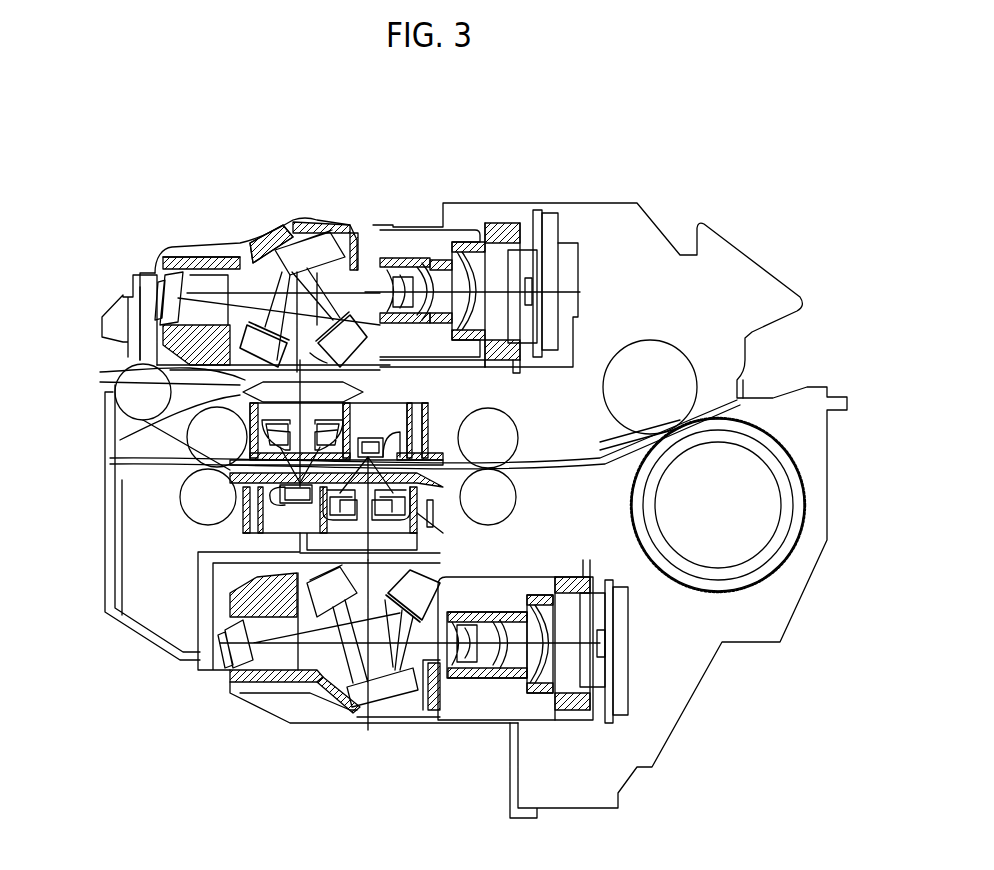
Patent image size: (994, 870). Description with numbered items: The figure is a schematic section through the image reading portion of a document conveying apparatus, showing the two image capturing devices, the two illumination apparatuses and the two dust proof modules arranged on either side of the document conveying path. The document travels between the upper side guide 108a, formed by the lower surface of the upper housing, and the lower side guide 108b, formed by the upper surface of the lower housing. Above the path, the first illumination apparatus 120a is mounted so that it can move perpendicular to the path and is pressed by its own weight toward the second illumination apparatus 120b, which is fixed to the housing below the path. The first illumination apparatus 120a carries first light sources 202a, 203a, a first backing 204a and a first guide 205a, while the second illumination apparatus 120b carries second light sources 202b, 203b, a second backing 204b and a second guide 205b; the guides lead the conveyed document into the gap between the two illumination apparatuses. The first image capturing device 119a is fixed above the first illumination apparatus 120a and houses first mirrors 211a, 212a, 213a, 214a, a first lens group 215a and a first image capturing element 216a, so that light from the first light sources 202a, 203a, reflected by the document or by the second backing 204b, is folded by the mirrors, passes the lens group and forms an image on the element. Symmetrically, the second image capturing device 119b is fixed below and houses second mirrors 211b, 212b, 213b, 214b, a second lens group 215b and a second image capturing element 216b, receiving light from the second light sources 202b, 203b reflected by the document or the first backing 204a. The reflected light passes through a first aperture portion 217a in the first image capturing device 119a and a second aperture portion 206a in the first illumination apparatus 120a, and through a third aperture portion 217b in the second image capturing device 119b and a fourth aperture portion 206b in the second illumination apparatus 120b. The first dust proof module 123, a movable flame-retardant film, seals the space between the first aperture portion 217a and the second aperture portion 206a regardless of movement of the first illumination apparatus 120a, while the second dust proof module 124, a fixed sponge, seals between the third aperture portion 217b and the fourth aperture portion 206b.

The upper side guide 108a is at (598, 440).
The lower side guide 108b is at (592, 472).
The first image capturing device 119a is at (548, 232).
The second image capturing device 119b is at (622, 657).
The first illumination apparatus 120a is at (440, 398).
The second illumination apparatus 120b is at (250, 530).
The first dust proof module 123 is at (140, 388).
The second dust proof module 124 is at (300, 553).
The first light source 202a is at (250, 462).
The second light source 202b is at (417, 512).
The first light source 203a is at (350, 455).
The second light source 203b is at (243, 532).
The first backing 204a is at (380, 443).
The second backing 204b is at (245, 497).
The first guide 205a is at (482, 452).
The second guide 205b is at (515, 494).
The second aperture portion 206a is at (200, 372).
The fourth aperture portion 206b is at (243, 572).
The first mirror 211a is at (290, 237).
The second mirror 211b is at (360, 695).
The first mirror 212a is at (140, 347).
The second mirror 212b is at (243, 650).
The first mirror 213a is at (362, 285).
The second mirror 213b is at (418, 693).
The first mirror 214a is at (168, 296).
The second mirror 214b is at (240, 650).
The first lens group 215a is at (430, 228).
The second lens group 215b is at (497, 710).
The first image capturing element 216a is at (528, 278).
The second image capturing element 216b is at (602, 635).
The first aperture portion 217a is at (372, 355).
The third aperture portion 217b is at (377, 557).